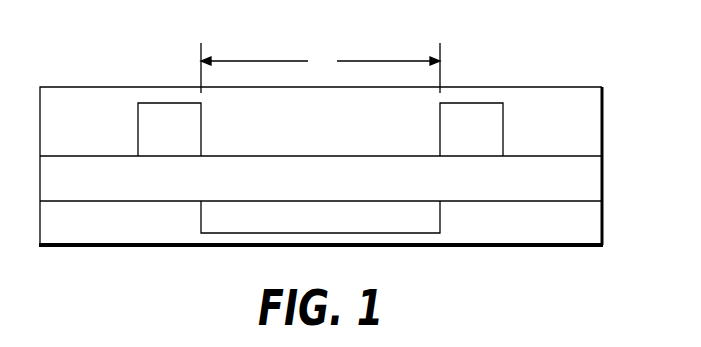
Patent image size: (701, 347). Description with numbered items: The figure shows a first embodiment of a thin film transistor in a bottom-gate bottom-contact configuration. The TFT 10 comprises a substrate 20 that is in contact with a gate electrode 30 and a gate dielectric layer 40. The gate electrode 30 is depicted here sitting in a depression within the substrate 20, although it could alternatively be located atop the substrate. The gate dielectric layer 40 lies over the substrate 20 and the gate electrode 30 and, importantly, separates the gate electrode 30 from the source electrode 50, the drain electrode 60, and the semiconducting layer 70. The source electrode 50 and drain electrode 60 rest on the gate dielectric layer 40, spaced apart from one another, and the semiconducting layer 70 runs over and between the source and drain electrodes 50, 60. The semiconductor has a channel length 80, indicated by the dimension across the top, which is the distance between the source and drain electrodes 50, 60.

The TFT 10 is at (118, 66).
The substrate 20 is at (101, 233).
The gate electrode 30 is at (332, 228).
The gate dielectric layer 40 is at (332, 191).
The source electrode 50 is at (138, 136).
The drain electrode 60 is at (503, 136).
The semiconducting layer 70 is at (332, 136).
The channel length 80 is at (320, 68).